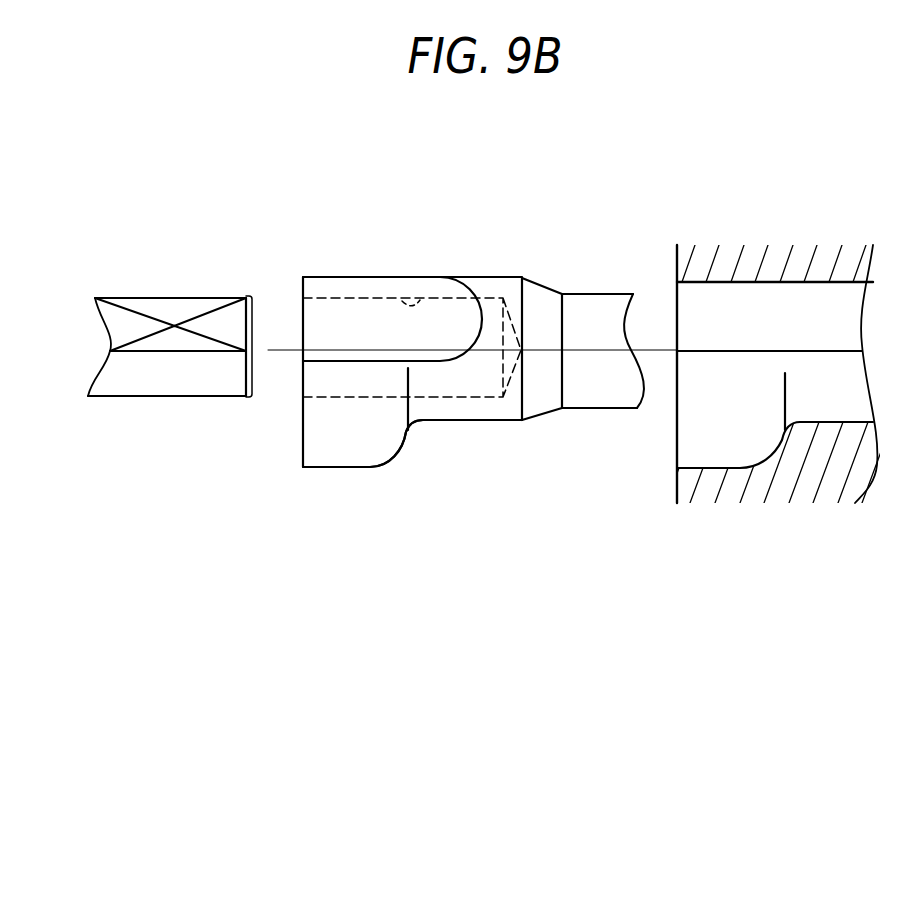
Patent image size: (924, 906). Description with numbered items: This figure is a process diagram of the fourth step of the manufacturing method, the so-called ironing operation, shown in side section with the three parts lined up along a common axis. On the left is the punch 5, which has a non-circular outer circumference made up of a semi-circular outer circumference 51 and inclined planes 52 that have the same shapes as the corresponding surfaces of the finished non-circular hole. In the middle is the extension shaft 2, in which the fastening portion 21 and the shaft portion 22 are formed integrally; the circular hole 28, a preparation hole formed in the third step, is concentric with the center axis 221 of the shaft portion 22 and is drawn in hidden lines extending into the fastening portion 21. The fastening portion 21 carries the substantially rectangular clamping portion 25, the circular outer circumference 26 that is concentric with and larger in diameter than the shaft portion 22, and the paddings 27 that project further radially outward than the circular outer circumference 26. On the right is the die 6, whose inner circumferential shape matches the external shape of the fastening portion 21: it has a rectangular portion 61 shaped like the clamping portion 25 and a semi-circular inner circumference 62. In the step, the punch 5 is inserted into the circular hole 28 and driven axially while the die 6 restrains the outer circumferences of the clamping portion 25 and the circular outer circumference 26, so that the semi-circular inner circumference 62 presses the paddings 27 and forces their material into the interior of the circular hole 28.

The punch 5 is at (170, 341).
The semi-circular outer circumference 51 is at (190, 383).
The inclined plane 52 is at (190, 305).
The extension shaft 2 is at (479, 350).
The fastening portion 21 is at (412, 361).
The shaft portion 22 is at (588, 339).
The center axis 221 is at (592, 350).
The clamping portion 25 is at (334, 451).
The circular outer circumference 26 is at (453, 421).
The padding 27 is at (343, 290).
The circular hole 28 is at (418, 298).
The die 6 is at (774, 376).
The rectangular portion 61 is at (738, 455).
The semi-circular inner circumference 62 is at (706, 293).